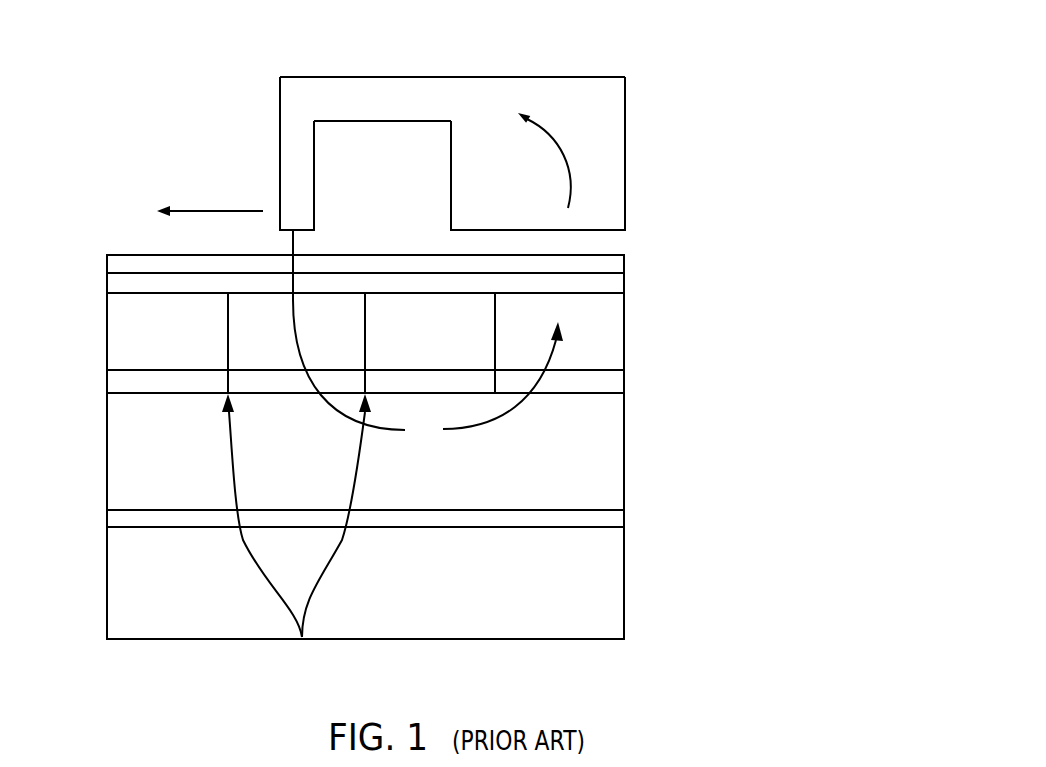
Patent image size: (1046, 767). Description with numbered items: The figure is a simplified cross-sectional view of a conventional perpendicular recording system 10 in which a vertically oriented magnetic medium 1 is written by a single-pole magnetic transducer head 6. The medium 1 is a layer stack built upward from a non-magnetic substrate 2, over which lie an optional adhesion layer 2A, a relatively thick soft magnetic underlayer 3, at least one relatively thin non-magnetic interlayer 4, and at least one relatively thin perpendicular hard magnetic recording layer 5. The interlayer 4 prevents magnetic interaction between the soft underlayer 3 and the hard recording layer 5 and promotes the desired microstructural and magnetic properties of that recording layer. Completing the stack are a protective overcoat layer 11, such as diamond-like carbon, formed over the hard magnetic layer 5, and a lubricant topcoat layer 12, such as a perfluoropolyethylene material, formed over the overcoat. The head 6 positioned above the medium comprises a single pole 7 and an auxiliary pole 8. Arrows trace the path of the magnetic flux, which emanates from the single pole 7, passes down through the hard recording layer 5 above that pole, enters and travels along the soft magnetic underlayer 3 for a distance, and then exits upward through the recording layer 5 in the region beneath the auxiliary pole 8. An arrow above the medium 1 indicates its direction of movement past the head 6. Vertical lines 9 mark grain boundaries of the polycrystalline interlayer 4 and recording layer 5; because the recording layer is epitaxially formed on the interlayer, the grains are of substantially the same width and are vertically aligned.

The magnetic medium 1 is at (89, 266).
The non-magnetic substrate 2 is at (639, 583).
The adhesion layer 2A is at (639, 519).
The soft magnetic underlayer 3 is at (639, 448).
The non-magnetic interlayer 4 is at (639, 383).
The perpendicular hard magnetic recording layer 5 is at (639, 324).
The single-pole magnetic transducer head 6 is at (326, 72).
The single pole 7 is at (262, 141).
The auxiliary pole 8 is at (643, 126).
The vertical lines 9 is at (302, 640).
The perpendicular recording system 10 is at (626, 54).
The protective overcoat layer 11 is at (639, 283).
The lubricant topcoat layer 12 is at (639, 262).